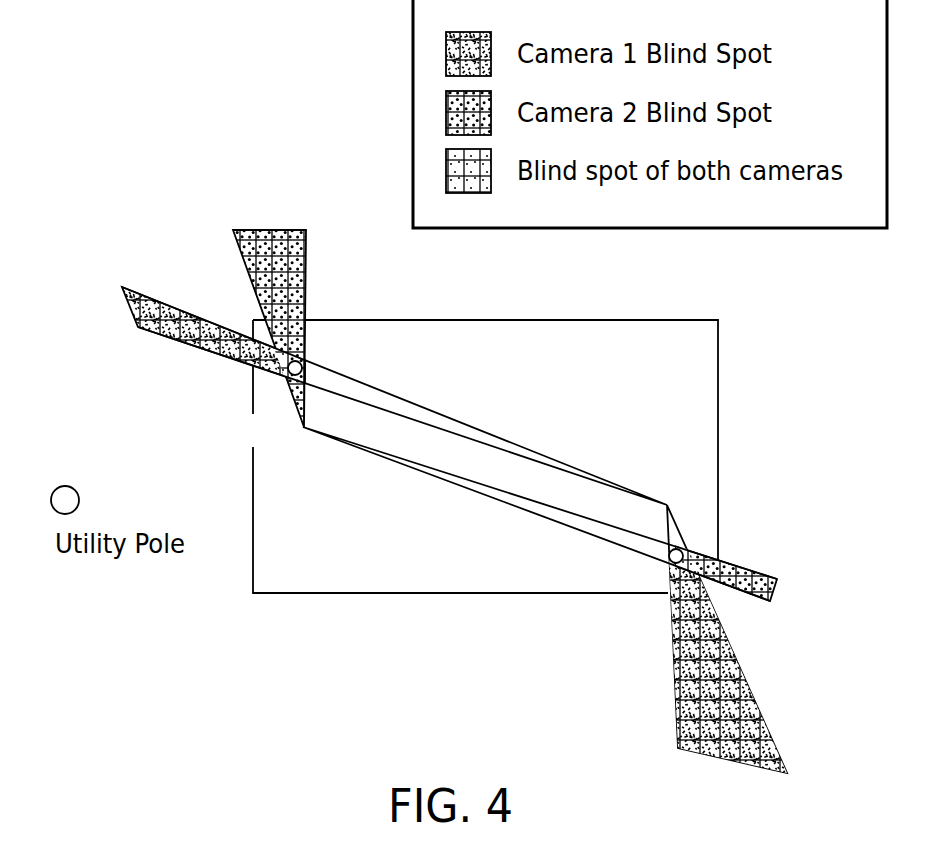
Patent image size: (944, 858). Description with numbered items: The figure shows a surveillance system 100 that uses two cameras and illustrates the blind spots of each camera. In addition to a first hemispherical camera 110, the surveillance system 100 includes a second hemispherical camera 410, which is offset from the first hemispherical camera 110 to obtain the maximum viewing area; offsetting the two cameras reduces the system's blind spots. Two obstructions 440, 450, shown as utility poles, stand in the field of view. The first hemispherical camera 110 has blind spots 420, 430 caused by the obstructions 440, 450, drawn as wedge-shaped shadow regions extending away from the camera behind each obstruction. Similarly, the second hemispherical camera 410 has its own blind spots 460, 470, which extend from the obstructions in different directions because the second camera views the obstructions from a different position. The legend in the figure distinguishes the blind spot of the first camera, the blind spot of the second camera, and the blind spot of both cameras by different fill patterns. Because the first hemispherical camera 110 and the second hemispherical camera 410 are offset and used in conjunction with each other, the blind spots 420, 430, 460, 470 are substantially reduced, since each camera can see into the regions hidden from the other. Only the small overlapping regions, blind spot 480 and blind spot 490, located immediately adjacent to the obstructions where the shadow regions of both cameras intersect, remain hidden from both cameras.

The surveillance system 100 is at (84, 107).
The hemispherical camera 110 is at (670, 502).
The second hemispherical camera 410 is at (300, 427).
The blindspot 420 is at (790, 598).
The blindspot 430 is at (267, 197).
The obstruction 440 is at (687, 547).
The obstruction 450 is at (307, 363).
The blindspot 460 is at (104, 300).
The blindspot 470 is at (659, 740).
The blindspot 480 is at (270, 340).
The blindspot 490 is at (711, 584).